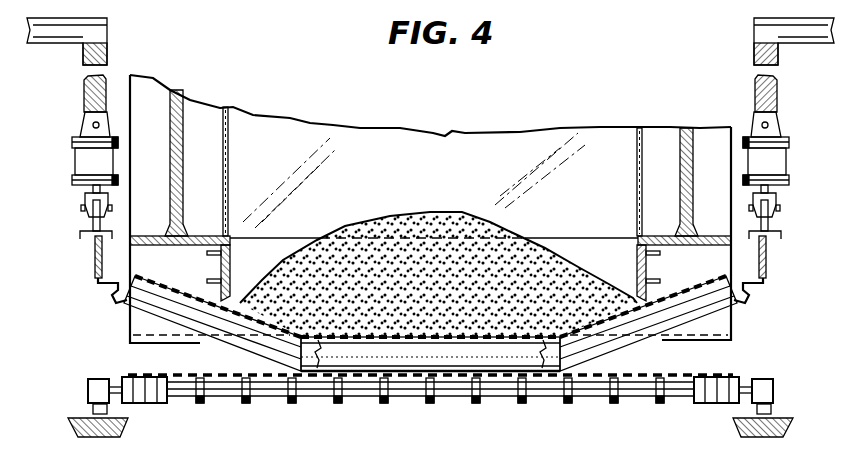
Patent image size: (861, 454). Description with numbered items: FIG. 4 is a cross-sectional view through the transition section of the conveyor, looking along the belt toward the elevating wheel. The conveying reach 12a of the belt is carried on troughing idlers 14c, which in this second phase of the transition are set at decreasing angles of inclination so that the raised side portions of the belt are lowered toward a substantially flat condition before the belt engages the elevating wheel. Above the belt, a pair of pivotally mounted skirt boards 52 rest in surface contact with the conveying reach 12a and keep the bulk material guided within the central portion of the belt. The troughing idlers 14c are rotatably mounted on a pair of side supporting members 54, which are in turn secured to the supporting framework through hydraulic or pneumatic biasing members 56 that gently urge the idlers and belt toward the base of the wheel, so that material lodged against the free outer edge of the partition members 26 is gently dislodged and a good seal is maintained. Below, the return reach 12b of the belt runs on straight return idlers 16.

The partition members 26 is at (435, 147).
The pivotally mounted skirt boards 52 is at (231, 245).
The hydraulic or pneumatic biasing members 56 is at (80, 168).
The side supporting members 54 is at (94, 266).
The troughing idlers 14c is at (133, 321).
The conveying reach 12a is at (238, 343).
The return reach 12b is at (672, 374).
The straight return idlers 16 is at (147, 405).